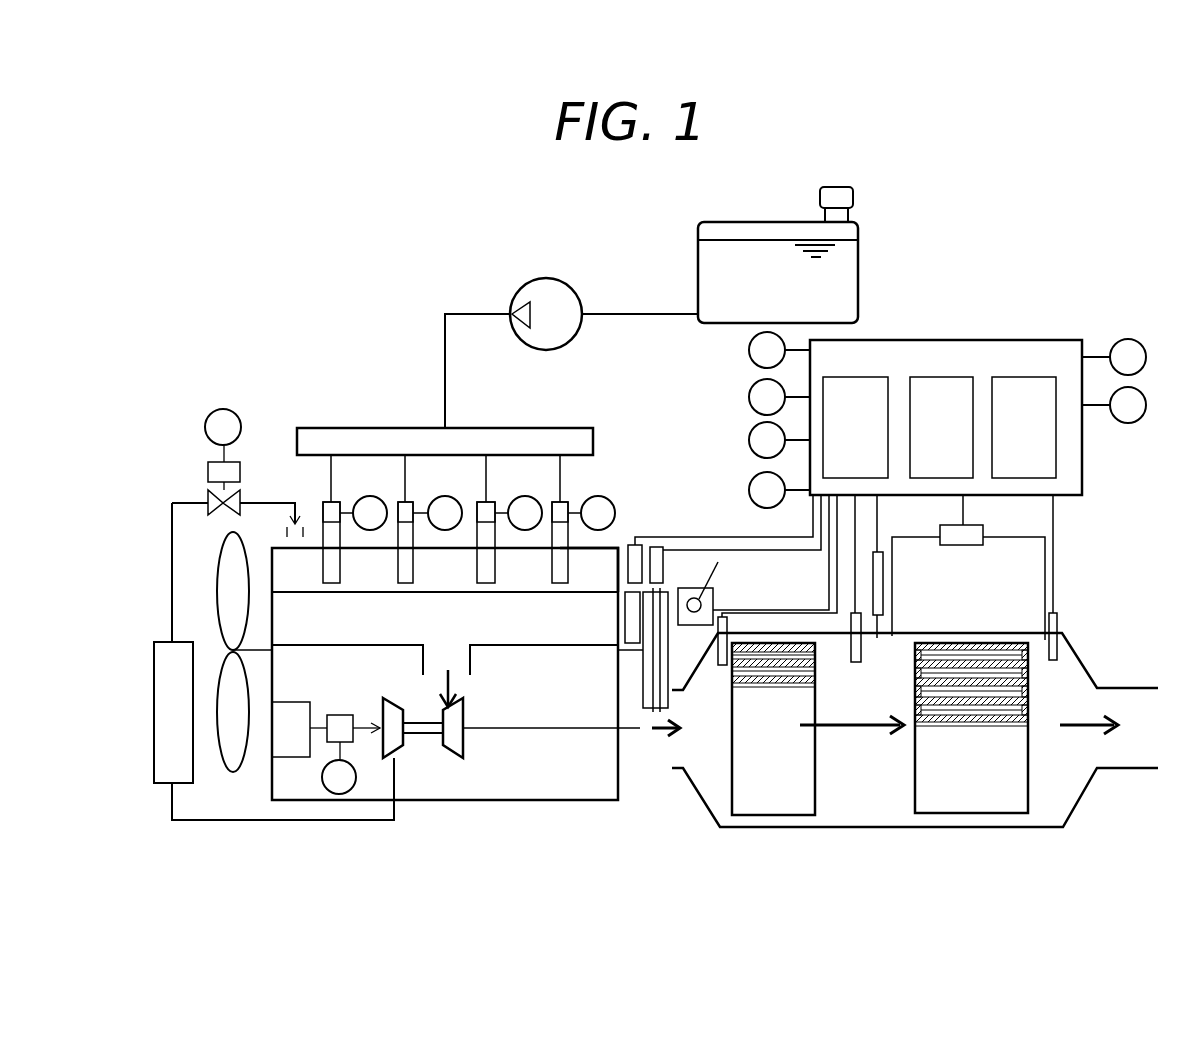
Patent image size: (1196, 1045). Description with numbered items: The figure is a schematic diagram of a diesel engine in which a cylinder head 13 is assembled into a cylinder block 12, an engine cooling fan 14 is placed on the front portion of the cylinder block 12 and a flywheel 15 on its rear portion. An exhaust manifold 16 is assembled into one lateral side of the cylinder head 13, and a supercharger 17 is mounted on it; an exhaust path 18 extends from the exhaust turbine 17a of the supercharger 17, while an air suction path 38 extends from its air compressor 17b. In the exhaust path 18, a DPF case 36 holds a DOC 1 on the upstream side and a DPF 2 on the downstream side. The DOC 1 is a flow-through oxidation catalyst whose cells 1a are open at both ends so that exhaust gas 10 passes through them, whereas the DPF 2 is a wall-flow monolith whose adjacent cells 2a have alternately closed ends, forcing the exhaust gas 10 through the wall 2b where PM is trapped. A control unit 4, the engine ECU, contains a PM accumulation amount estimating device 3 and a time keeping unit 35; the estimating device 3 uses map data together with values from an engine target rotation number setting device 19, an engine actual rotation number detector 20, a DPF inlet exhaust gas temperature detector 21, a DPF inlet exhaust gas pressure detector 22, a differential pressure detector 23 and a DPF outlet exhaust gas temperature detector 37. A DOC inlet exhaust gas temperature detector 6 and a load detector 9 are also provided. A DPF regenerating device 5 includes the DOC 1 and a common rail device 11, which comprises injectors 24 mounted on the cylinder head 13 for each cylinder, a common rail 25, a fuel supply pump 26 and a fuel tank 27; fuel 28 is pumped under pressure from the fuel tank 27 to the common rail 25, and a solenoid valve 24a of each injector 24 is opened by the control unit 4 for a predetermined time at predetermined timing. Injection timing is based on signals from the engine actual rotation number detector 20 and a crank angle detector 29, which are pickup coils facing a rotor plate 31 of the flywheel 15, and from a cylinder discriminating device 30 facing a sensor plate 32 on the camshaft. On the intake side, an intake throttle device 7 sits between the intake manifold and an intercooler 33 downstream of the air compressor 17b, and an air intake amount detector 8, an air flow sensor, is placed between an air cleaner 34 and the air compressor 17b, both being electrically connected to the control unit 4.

The DOC 1 is at (773, 755).
The cells 1a is at (755, 668).
The DPF 2 is at (971, 754).
The cells 2a is at (988, 708).
The wall 2b is at (950, 705).
The PM accumulation amount estimating device 3 is at (848, 388).
The control unit 4 is at (947, 388).
The DPF regenerating device 5 is at (456, 512).
The DOC inlet exhaust gas temperature detector 6 is at (721, 667).
The intake throttle device 7 is at (214, 497).
The air intake amount detector 8 is at (348, 716).
The load detector 9 is at (929, 385).
The exhaust gas 10 is at (634, 732).
The common rail device 11 is at (485, 512).
The cylinder block 12 is at (460, 663).
The cylinder head 13 is at (613, 558).
The engine cooling fan 14 is at (229, 548).
The flywheel 15 is at (670, 656).
The exhaust manifold 16 is at (318, 633).
The supercharger 17 is at (427, 740).
The exhaust turbine 17a is at (463, 735).
The air compressor 17b is at (381, 752).
The exhaust path 18 is at (904, 752).
The engine target rotation number setting device 19 is at (713, 601).
The engine actual rotation number detector 20 is at (730, 539).
The DPF inlet exhaust gas temperature detector 21 is at (856, 664).
The DPF inlet exhaust gas pressure detector 22 is at (879, 583).
The differential pressure detector 23 is at (965, 542).
The injectors 24 is at (404, 575).
The solenoid valve 24a is at (400, 502).
The common rail 25 is at (372, 440).
The fuel supply pump 26 is at (555, 292).
The fuel tank 27 is at (853, 230).
The fuel 28 is at (836, 252).
The crank angle detector 29 is at (657, 547).
The cylinder discriminating device 30 is at (638, 553).
The rotor plate 31 is at (661, 608).
The sensor plate 32 is at (632, 625).
The intercooler 33 is at (183, 750).
The air cleaner 34 is at (287, 748).
The time keeping unit 35 is at (1006, 385).
The DPF case 36 is at (893, 830).
The DPF outlet exhaust gas temperature detector 37 is at (1051, 662).
The air suction path 38 is at (285, 822).